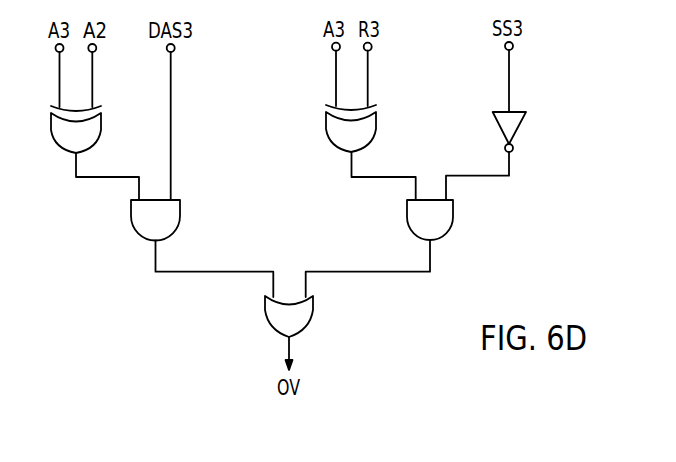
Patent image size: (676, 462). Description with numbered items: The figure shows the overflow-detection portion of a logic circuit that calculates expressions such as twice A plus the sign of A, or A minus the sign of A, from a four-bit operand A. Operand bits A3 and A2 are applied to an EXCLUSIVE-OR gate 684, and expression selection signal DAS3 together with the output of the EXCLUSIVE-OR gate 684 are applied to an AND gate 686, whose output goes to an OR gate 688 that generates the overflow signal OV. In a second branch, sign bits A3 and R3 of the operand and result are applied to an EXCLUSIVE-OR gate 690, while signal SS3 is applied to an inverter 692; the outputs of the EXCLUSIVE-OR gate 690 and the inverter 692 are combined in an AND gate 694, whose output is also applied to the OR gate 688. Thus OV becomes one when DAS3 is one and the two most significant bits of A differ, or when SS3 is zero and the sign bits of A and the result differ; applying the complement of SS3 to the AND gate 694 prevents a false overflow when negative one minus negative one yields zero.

The EXCLUSIVE-OR gate 684 is at (52, 133).
The AND gate 686 is at (131, 222).
The OR gate 688 is at (266, 316).
The EXCLUSIVE-OR gate 690 is at (326, 134).
The inverter 692 is at (517, 128).
The AND gate 694 is at (453, 220).